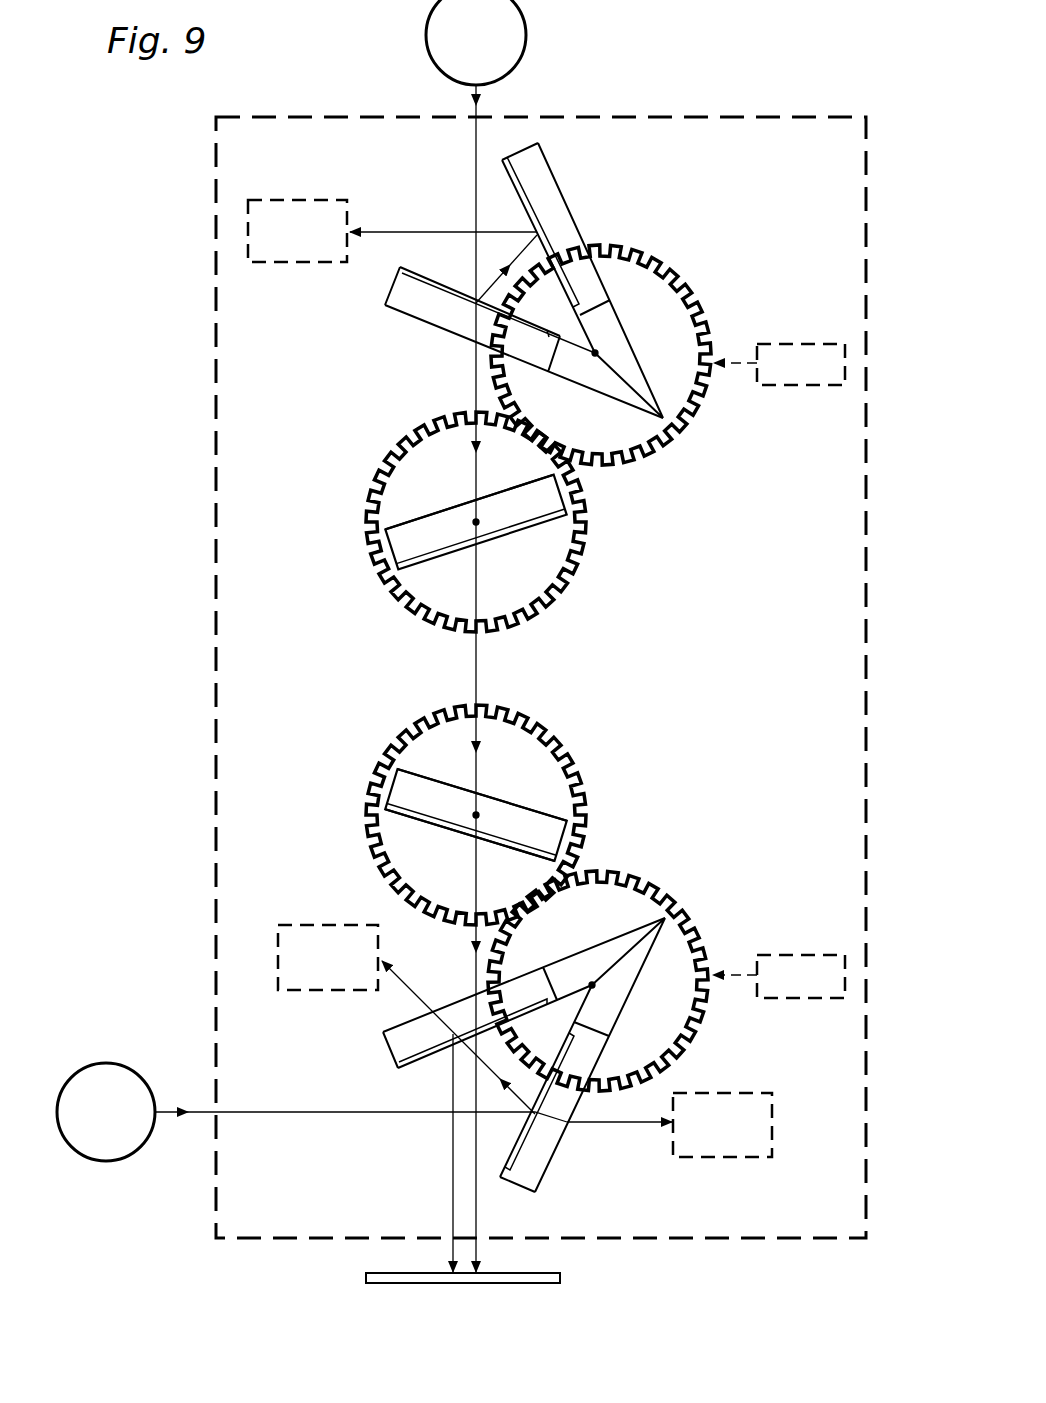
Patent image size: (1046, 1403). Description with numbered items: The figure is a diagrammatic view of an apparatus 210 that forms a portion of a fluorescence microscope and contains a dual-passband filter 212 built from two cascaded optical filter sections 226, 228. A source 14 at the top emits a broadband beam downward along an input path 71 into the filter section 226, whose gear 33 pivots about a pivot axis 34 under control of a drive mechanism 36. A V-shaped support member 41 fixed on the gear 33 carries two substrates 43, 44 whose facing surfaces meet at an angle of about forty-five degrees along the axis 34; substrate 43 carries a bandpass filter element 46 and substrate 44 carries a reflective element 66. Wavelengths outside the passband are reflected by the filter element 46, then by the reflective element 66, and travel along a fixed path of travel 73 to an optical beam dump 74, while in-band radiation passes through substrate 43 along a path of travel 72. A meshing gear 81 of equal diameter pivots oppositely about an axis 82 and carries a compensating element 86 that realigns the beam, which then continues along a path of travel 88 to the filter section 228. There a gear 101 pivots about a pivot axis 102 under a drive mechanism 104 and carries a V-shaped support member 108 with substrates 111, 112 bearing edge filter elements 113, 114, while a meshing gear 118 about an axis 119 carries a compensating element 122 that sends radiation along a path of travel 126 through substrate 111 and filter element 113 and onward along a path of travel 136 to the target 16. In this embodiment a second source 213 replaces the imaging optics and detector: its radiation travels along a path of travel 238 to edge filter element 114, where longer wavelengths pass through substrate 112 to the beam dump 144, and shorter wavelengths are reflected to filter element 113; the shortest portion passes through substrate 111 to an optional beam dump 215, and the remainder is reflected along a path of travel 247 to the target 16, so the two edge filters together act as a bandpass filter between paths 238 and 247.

The source 14 is at (427, 38).
The target 16 is at (548, 1284).
The gear 33 is at (670, 435).
The pivot axis 34 is at (596, 362).
The drive mechanism 36 is at (800, 387).
The V-shaped support member 41 is at (633, 350).
The substrate 43 is at (403, 315).
The substrate 44 is at (565, 201).
The bandpass filter element 46 is at (420, 272).
The reflective element 66 is at (512, 194).
The beam 71 is at (476, 160).
The path of travel 72 is at (476, 383).
The path of travel 73 is at (398, 230).
The optical beam dump 74 is at (297, 198).
The gear 81 is at (365, 523).
The axis 82 is at (483, 520).
The compensating element 86 is at (433, 512).
The path of travel 88 is at (478, 670).
The gear 101 is at (703, 1020).
The pivot axis 102 is at (593, 980).
The drive mechanism 104 is at (800, 998).
The V-shaped support member 108 is at (633, 992).
The substrate 111 is at (390, 1013).
The substrate 112 is at (560, 1148).
The edge filter element 113 is at (400, 1082).
The edge filter element 114 is at (507, 1152).
The gear 118 is at (365, 817).
The axis 119 is at (480, 817).
The compensating element 122 is at (498, 798).
The path of travel 126 is at (472, 853).
The path of travel 136 is at (476, 1200).
The beam dump 144 is at (773, 1135).
The apparatus 210 is at (673, 55).
The dual-passband filter 212 is at (580, 112).
The source 213 is at (93, 1157).
The beam dump 215 is at (305, 922).
The optical filter section 226 is at (615, 508).
The optical filter section 228 is at (615, 830).
The path of travel 238 is at (318, 1115).
The path of travel 247 is at (453, 1188).